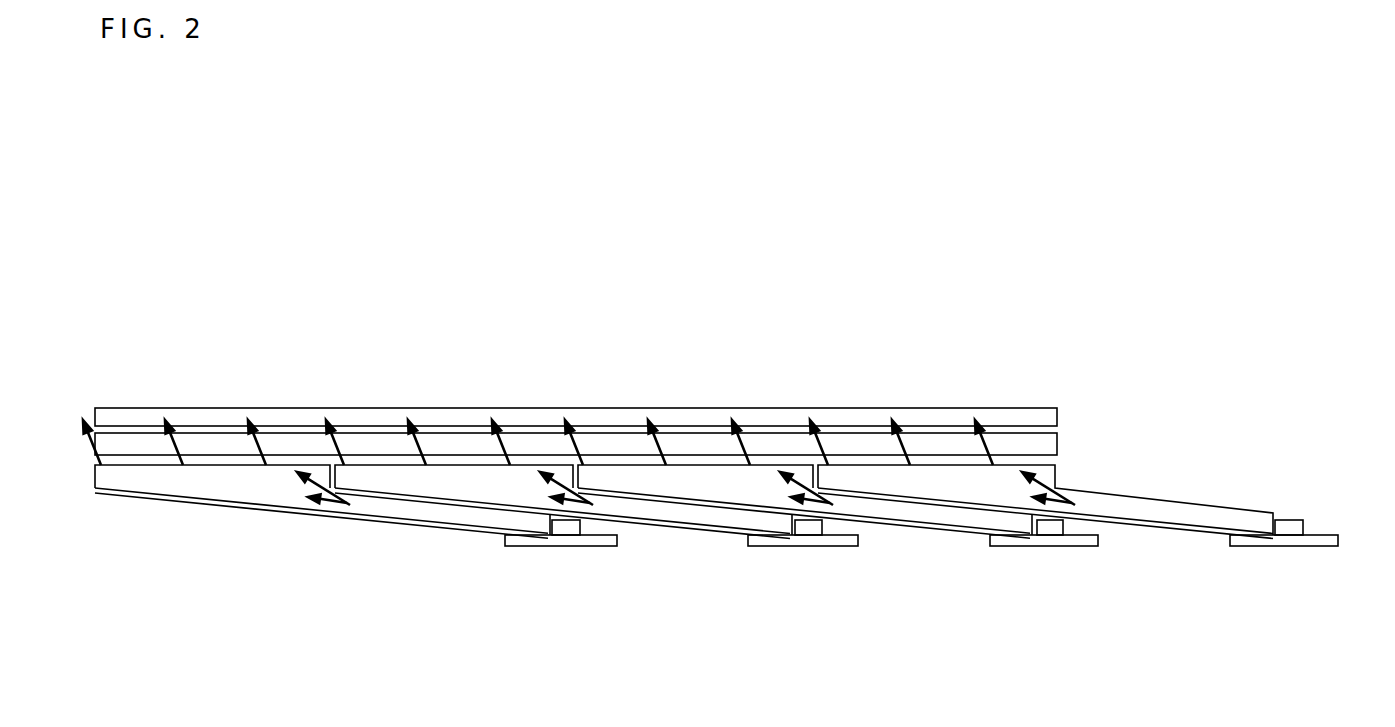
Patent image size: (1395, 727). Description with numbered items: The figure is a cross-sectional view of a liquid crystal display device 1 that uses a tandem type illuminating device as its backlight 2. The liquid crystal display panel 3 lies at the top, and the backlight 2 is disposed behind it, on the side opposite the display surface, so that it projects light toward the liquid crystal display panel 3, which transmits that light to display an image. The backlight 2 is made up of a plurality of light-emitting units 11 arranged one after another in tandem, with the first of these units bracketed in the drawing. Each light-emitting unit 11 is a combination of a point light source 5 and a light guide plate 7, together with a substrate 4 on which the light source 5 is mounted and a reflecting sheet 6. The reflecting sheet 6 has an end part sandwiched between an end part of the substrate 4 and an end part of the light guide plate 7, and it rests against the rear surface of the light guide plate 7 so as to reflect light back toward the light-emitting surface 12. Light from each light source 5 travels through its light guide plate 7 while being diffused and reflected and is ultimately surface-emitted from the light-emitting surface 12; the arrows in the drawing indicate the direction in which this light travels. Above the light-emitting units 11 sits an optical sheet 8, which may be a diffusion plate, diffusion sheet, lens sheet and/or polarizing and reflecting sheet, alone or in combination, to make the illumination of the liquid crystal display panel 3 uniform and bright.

The liquid crystal display device 1 is at (1055, 265).
The backlight 2 is at (1343, 431).
The liquid crystal display panel 3 is at (1058, 416).
The substrate 4 is at (521, 547).
The light source 5 is at (570, 530).
The reflecting sheet 6 is at (303, 514).
The light guide plate 7 is at (207, 490).
The optical sheet 8 is at (1058, 447).
The light-emitting unit 11 is at (187, 607).
The light-emitting surface 12 is at (221, 465).